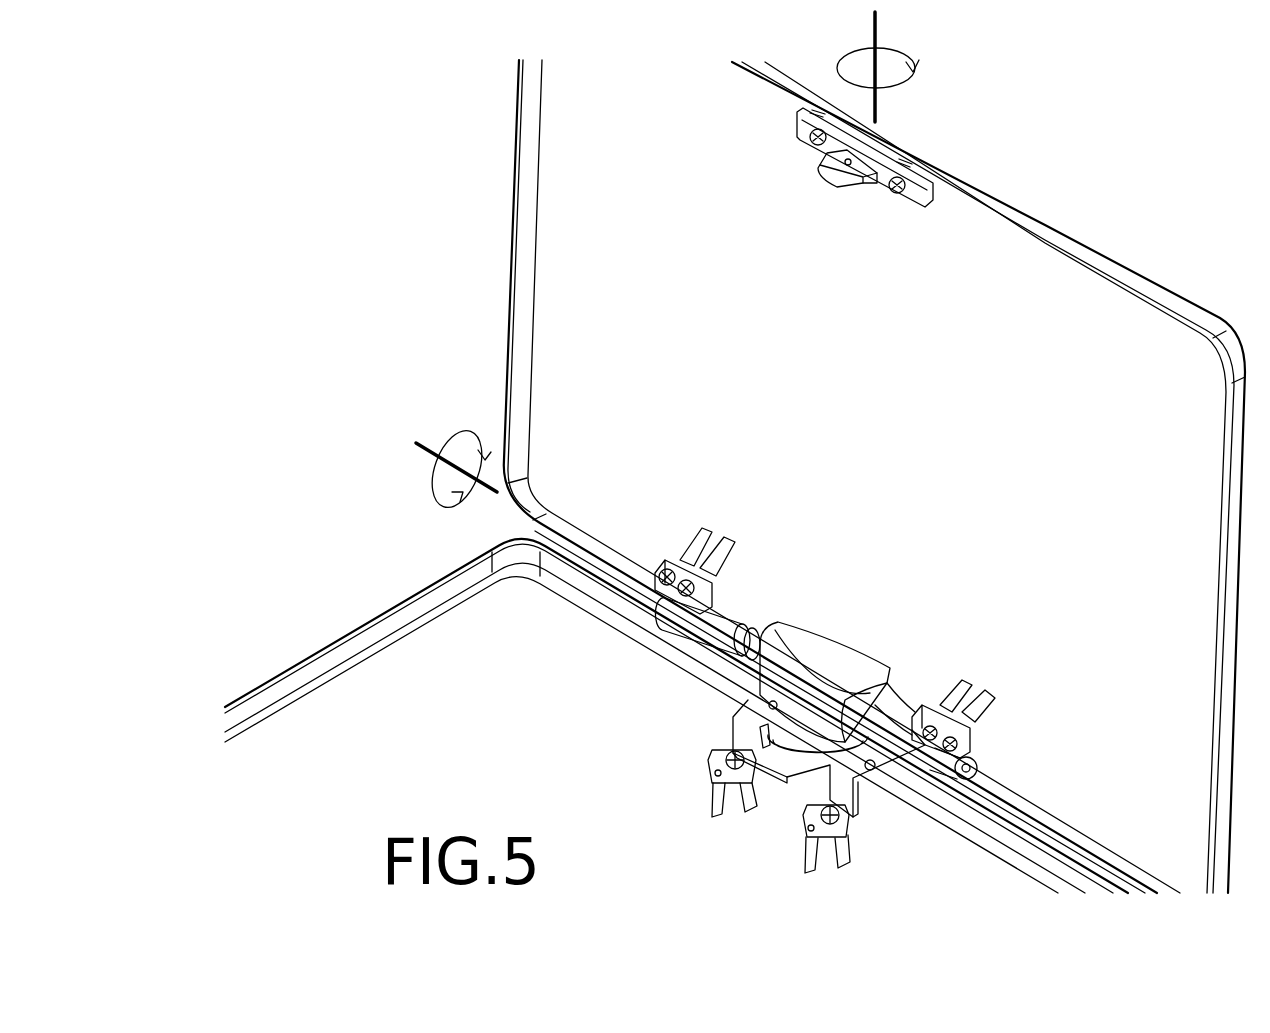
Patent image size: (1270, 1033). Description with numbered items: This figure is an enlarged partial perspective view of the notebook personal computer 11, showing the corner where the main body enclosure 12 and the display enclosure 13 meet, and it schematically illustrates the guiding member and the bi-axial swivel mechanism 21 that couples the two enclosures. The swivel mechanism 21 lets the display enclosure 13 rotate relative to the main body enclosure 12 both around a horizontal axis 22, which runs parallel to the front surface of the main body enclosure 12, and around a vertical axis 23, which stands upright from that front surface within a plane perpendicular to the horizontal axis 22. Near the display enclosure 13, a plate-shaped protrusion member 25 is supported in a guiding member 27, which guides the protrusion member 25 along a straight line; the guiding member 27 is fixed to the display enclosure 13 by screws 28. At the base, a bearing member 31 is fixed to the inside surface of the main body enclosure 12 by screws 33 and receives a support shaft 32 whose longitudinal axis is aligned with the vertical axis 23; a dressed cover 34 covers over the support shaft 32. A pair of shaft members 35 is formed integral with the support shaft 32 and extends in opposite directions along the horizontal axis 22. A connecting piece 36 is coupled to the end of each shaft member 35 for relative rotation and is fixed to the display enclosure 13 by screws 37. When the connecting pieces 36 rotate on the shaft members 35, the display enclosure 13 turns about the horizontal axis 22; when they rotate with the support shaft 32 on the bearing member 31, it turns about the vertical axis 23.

The notebook personal computer 11 is at (335, 302).
The main body enclosure 12 is at (348, 598).
The display enclosure 13 is at (480, 220).
The swivel mechanism 21 is at (933, 650).
The horizontal axis 22 is at (427, 447).
The vertical axis 23 is at (875, 112).
The protrusion member 25 is at (833, 178).
The guiding member 27 is at (927, 205).
The screws 28 is at (810, 140).
The bearing member 31 is at (862, 800).
The support shaft 32 is at (768, 729).
The screws 33 is at (718, 775).
The dressed cover 34 is at (815, 665).
The shaft members 35 is at (770, 614).
The connecting piece 36 is at (732, 588).
The screws 37 is at (660, 570).